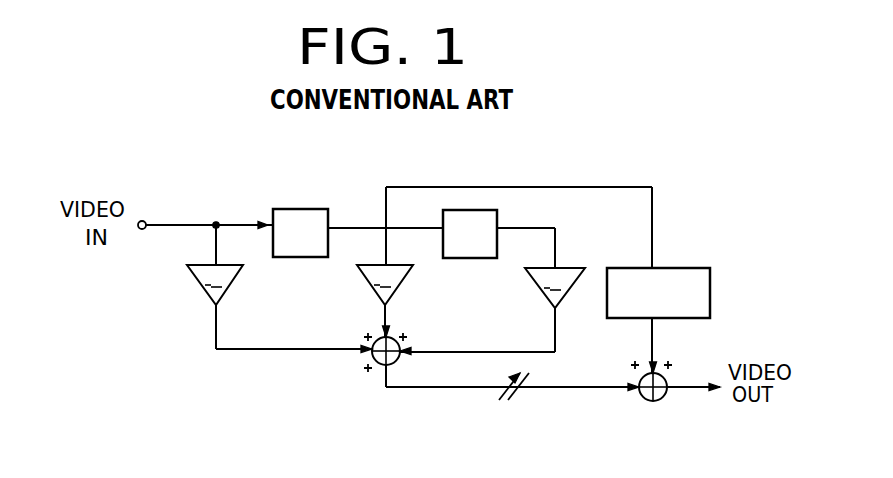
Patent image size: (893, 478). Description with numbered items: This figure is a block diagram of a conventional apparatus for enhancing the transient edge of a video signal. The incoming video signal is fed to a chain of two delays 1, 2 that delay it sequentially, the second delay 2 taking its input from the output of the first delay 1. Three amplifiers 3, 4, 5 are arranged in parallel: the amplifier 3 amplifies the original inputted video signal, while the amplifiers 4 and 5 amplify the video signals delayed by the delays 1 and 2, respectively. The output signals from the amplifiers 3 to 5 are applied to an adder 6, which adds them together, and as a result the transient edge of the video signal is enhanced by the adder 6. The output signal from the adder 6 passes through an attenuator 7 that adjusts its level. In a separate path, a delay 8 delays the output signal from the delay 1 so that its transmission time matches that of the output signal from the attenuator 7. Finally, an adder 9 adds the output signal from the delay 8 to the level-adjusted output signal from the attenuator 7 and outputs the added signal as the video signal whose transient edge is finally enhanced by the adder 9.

The delay 1 is at (286, 207).
The delay 2 is at (477, 210).
The amplifier 3 is at (200, 283).
The amplifier 4 is at (370, 285).
The amplifier 5 is at (537, 285).
The adder 6 is at (395, 362).
The attenuator 7 is at (510, 396).
The delay 8 is at (678, 267).
The adder 9 is at (640, 395).